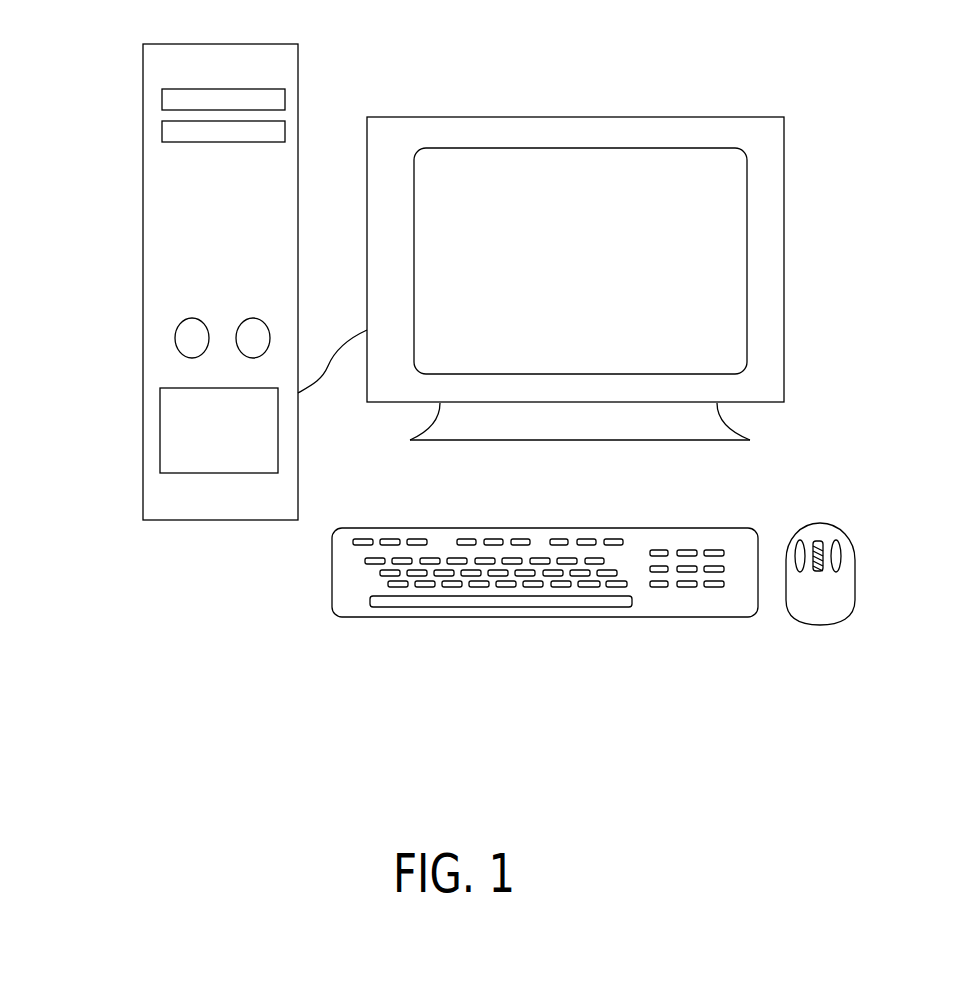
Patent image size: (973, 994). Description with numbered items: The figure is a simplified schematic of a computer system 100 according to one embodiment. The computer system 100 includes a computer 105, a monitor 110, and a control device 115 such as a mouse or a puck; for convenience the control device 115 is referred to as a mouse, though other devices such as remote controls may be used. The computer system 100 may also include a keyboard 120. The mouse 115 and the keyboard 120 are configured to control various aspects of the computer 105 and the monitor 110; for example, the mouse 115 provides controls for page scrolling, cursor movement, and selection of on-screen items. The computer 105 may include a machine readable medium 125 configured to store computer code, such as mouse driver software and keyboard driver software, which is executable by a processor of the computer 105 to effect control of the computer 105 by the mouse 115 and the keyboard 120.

The computer system 100 is at (708, 735).
The computer 105 is at (192, 528).
The monitor 110 is at (428, 110).
The control device 115 is at (862, 548).
The keyboard 120 is at (464, 622).
The machine readable medium 125 is at (177, 97).